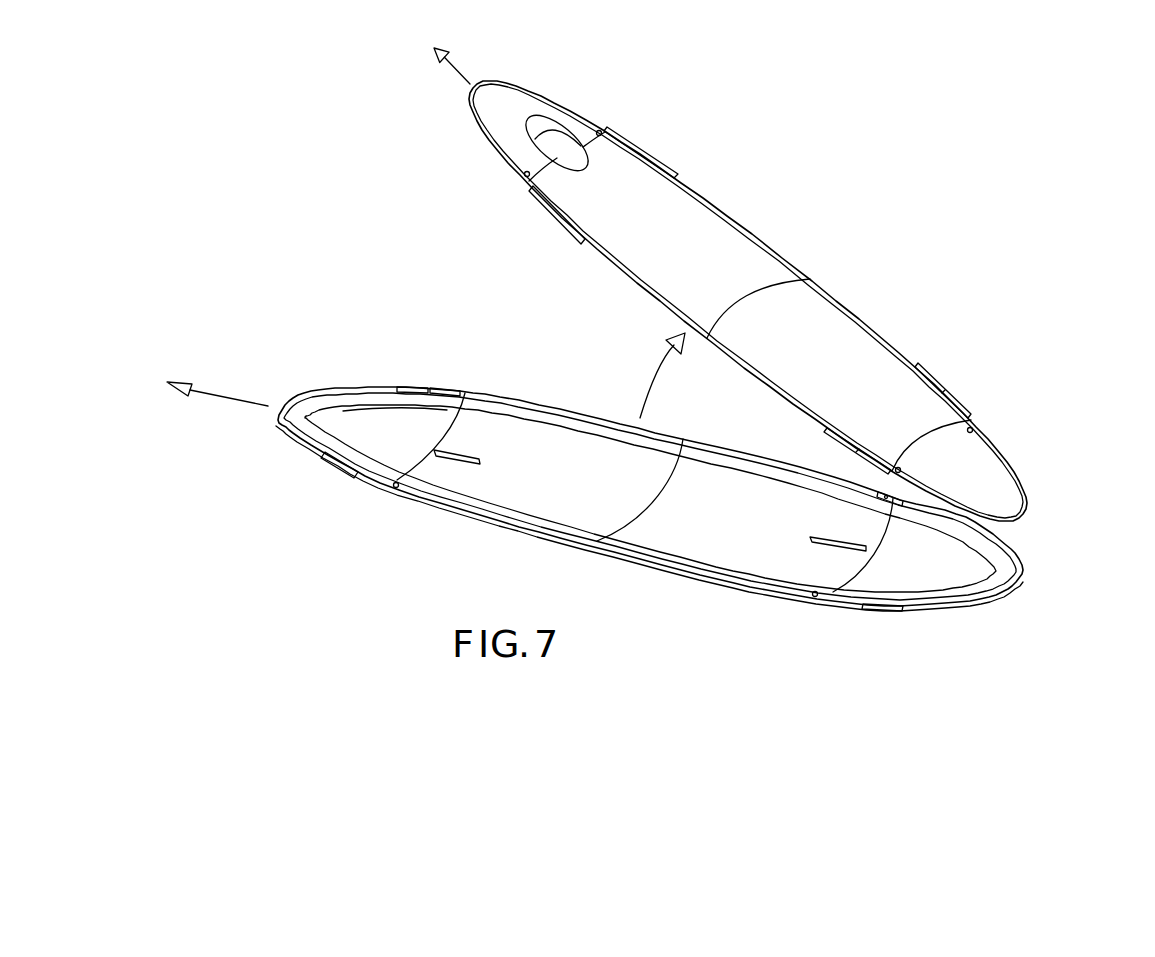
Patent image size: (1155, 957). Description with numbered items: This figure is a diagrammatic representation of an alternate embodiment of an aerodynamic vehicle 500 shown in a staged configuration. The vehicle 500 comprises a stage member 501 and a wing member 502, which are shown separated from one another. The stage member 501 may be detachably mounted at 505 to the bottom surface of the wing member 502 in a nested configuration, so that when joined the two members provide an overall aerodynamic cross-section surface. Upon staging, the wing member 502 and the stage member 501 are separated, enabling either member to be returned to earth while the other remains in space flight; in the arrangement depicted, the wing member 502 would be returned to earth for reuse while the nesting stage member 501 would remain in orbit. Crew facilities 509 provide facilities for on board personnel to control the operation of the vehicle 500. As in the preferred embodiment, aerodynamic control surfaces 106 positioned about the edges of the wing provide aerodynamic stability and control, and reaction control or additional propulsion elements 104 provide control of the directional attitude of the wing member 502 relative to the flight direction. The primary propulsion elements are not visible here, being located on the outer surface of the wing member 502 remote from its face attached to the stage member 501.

The aerodynamic vehicle 500 is at (1041, 529).
The stage member 501 is at (762, 242).
The wing member 502 is at (704, 443).
The detachable mounting 505 is at (461, 451).
The crew facilities 509 is at (558, 135).
The additional propulsion elements 104 is at (604, 132).
The aerodynamic control surfaces 106 is at (650, 161).